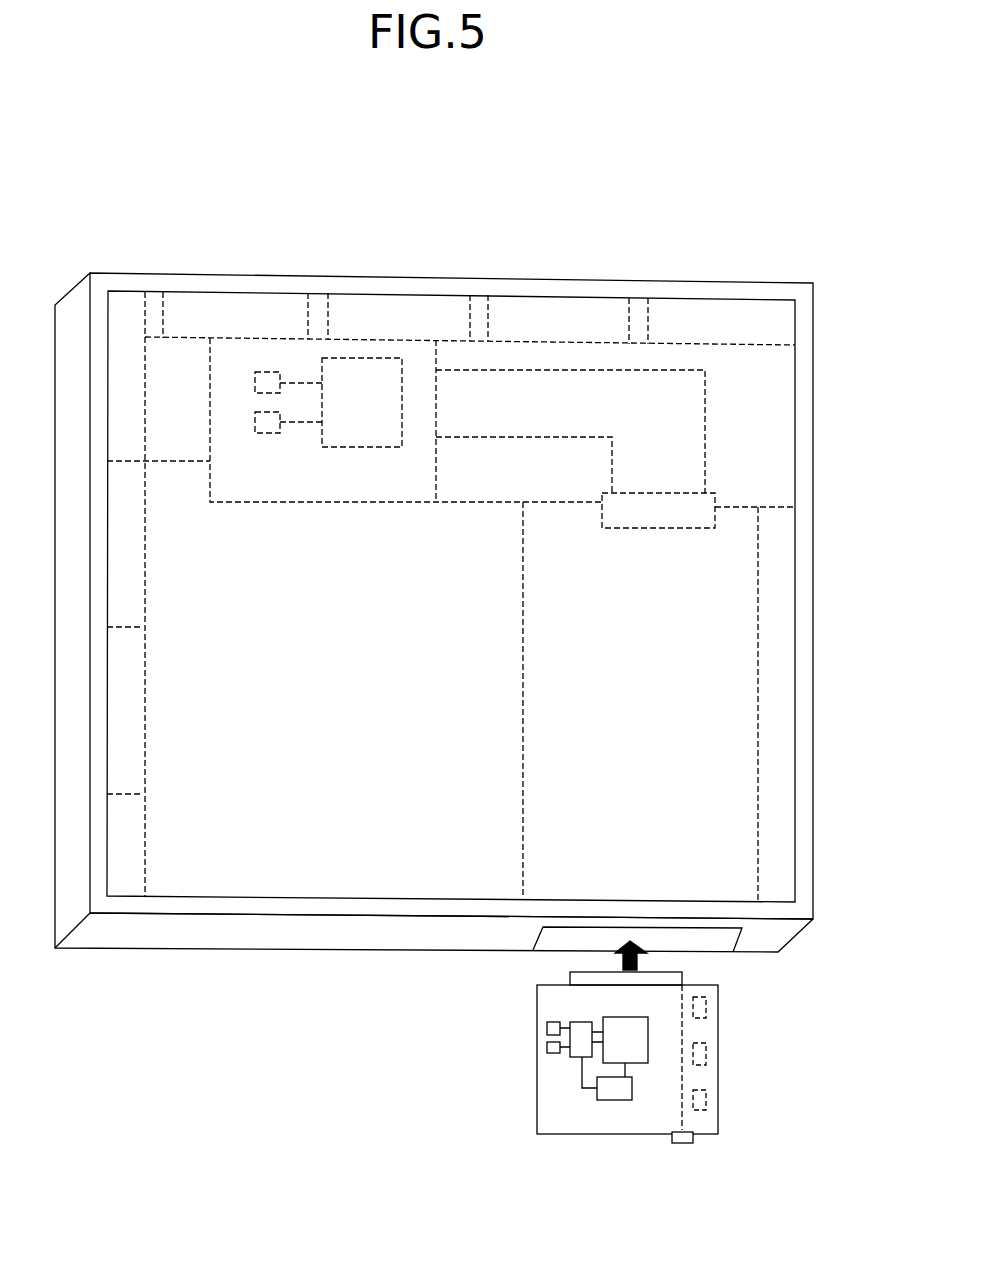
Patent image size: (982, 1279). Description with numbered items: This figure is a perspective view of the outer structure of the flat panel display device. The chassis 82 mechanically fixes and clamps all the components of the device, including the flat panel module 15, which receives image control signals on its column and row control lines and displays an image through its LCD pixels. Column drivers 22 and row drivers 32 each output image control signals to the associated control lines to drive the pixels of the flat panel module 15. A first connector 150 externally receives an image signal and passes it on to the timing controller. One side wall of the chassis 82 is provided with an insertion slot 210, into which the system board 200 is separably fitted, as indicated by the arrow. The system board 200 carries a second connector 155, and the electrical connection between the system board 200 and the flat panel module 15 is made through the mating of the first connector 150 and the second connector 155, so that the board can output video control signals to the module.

The column drivers 22 is at (247, 310).
The flat panel module 15 is at (352, 736).
The row drivers 32 is at (137, 579).
The chassis 82 is at (130, 907).
The first connector 150 is at (648, 512).
The second connector 155 is at (682, 977).
The system board 200 is at (537, 1100).
The insertion slot 210 is at (737, 938).